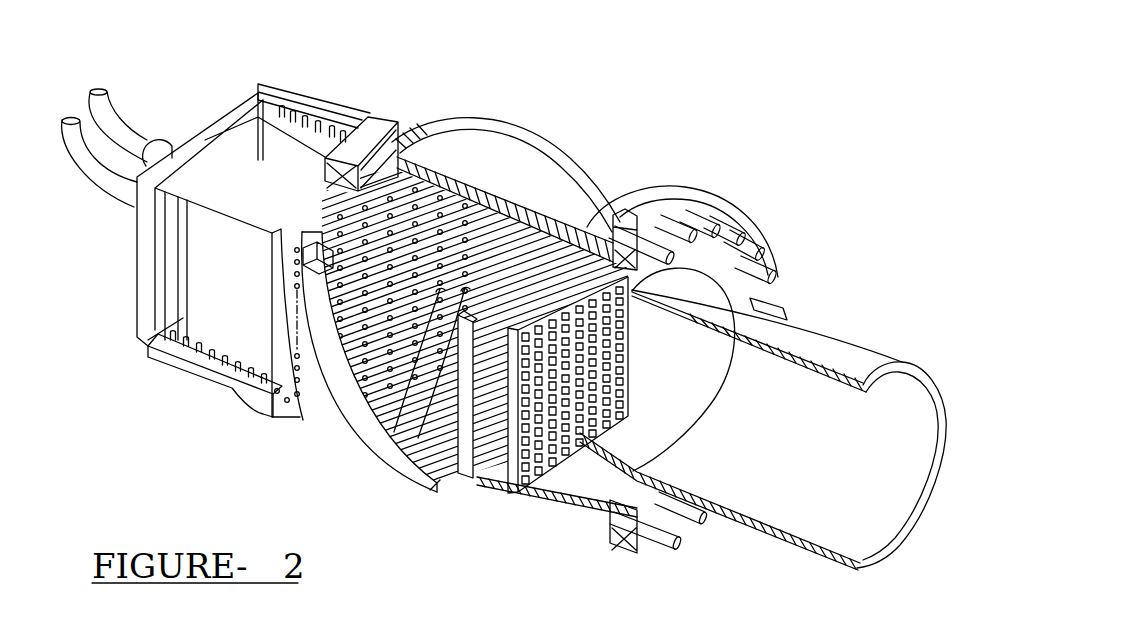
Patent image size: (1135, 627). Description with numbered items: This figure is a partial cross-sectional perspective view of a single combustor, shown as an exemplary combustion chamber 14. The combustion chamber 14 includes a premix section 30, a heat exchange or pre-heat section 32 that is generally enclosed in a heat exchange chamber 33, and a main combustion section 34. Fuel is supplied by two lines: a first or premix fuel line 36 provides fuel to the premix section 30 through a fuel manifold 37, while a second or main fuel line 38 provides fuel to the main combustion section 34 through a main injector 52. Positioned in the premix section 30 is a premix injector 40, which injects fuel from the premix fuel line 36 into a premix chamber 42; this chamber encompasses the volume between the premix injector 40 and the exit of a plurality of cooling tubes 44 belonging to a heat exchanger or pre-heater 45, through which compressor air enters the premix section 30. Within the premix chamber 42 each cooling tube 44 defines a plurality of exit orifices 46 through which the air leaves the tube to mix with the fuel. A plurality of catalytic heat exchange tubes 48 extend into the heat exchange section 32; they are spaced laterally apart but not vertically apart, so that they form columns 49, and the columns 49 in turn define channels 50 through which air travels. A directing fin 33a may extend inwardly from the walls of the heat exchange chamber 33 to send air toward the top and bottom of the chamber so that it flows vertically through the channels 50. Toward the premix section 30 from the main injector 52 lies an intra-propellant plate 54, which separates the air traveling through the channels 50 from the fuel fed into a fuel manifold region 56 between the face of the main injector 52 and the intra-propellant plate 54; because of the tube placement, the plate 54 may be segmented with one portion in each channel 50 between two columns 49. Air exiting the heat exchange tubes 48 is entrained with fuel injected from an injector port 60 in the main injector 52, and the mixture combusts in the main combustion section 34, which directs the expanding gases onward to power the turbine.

The combustion chamber 14 is at (763, 348).
The premix section 30 is at (237, 249).
The heat exchange section 32 is at (446, 288).
The heat exchange chamber 33 is at (450, 178).
The directing fin 33a is at (340, 400).
The main combustion section 34 is at (788, 437).
The premix fuel line 36 is at (103, 114).
The fuel manifold 37 is at (240, 105).
The main fuel line 38 is at (73, 147).
The premix injector 40 is at (180, 320).
The premix chamber 42 is at (200, 340).
The cooling tubes 44 is at (293, 403).
The heat exchanger 45 is at (338, 448).
The exit orifices 46 is at (268, 362).
The heat exchange tubes 48 is at (405, 437).
The columns 49 is at (430, 274).
The channels 50 is at (400, 270).
The main injector 52 is at (536, 460).
The intra-propellant plate 54 is at (467, 448).
The fuel manifold region 56 is at (612, 200).
The injector port 60 is at (532, 487).